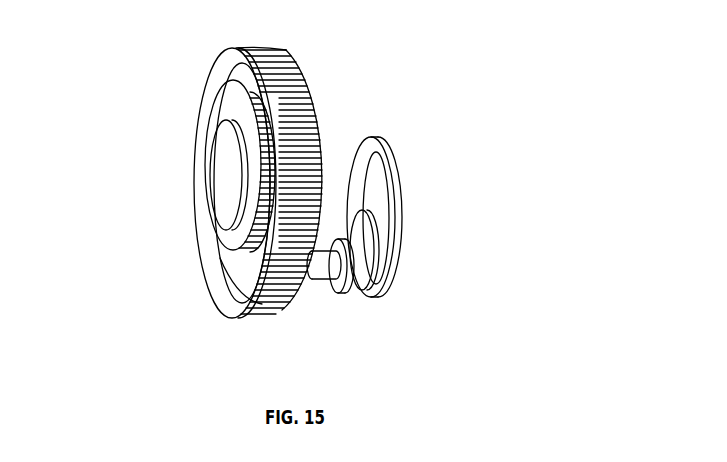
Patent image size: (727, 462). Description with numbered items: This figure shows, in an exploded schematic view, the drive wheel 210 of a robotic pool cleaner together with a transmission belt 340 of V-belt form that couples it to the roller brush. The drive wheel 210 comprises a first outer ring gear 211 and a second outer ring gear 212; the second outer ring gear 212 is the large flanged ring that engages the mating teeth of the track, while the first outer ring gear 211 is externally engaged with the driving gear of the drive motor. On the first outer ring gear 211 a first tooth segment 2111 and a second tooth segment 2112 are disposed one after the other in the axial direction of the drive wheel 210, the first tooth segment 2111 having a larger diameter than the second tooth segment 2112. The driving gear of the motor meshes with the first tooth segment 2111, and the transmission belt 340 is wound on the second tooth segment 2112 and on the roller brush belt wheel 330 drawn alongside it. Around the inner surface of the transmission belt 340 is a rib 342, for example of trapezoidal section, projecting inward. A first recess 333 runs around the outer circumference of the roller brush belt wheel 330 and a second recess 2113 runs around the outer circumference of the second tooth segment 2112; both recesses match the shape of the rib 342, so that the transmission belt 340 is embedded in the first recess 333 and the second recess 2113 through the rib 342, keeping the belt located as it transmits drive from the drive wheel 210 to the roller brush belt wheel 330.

The drive wheel 210 is at (300, 199).
The first outer ring gear 211 is at (369, 139).
The first tooth segment 2111 is at (238, 128).
The second tooth segment 2112 is at (266, 180).
The recess 2113 is at (262, 224).
The second outer ring gear 212 is at (233, 317).
The roller brush belt wheel 330 is at (313, 280).
The recess 333 is at (340, 296).
The transmission belt 340 is at (426, 217).
The rib 342 is at (368, 262).